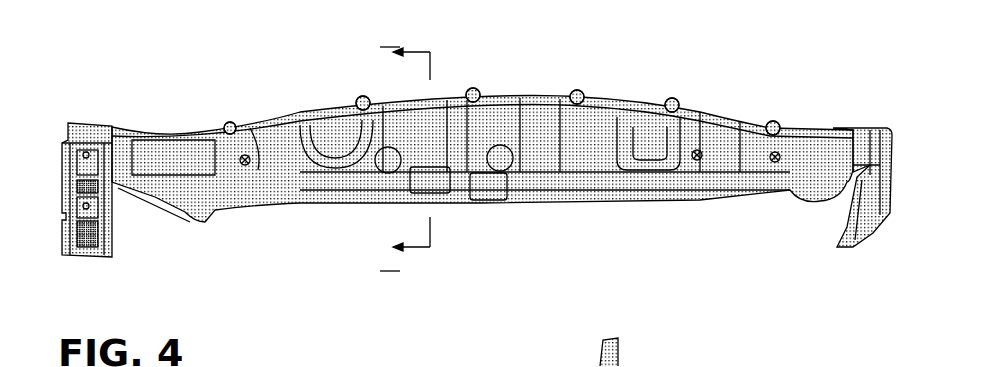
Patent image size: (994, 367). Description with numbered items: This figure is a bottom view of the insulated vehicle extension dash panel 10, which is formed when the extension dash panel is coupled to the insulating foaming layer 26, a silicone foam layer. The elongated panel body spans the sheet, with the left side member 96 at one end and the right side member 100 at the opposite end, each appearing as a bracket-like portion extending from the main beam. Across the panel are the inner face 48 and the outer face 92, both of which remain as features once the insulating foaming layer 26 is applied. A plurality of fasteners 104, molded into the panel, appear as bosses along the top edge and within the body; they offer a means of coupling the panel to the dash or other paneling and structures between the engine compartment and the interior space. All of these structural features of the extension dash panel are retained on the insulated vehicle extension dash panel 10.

The insulated vehicle extension dash panel 10 is at (763, 81).
The insulating foaming layer 26 is at (532, 103).
The inner face 48 is at (633, 102).
The outer face 92 is at (268, 118).
The left side member 96 is at (66, 147).
The right side member 100 is at (895, 128).
The fasteners 104 is at (246, 152).